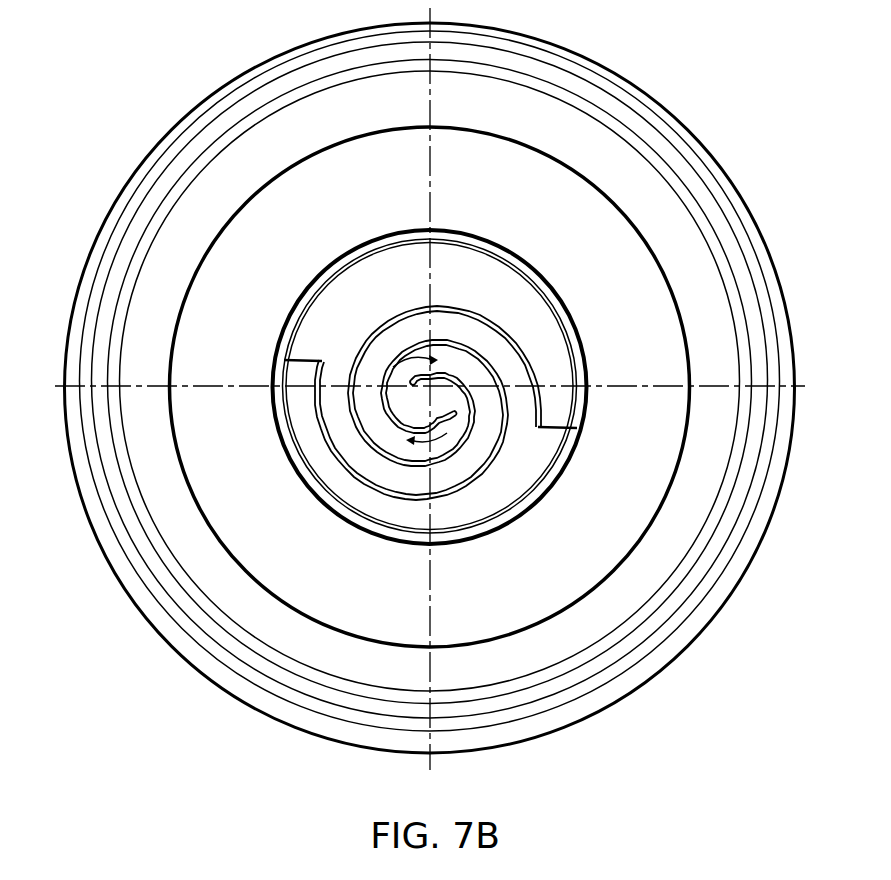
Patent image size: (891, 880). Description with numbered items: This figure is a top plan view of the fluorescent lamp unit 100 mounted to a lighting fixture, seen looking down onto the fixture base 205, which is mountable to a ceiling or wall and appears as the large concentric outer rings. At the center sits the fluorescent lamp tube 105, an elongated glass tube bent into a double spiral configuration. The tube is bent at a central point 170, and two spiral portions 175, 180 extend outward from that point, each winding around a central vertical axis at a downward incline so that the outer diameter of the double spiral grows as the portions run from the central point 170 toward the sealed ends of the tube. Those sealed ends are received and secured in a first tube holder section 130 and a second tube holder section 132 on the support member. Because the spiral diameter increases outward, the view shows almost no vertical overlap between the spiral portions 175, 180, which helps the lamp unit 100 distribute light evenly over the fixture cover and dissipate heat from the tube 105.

The fluorescent lamp unit 100 is at (440, 221).
The fluorescent lamp tube 105 is at (477, 300).
The first tube holder section 130 is at (281, 347).
The second tube holder section 132 is at (556, 440).
The central point 170 is at (433, 385).
The spiral portion 175 is at (410, 363).
The spiral portion 180 is at (420, 450).
The fixture base 205 is at (682, 240).